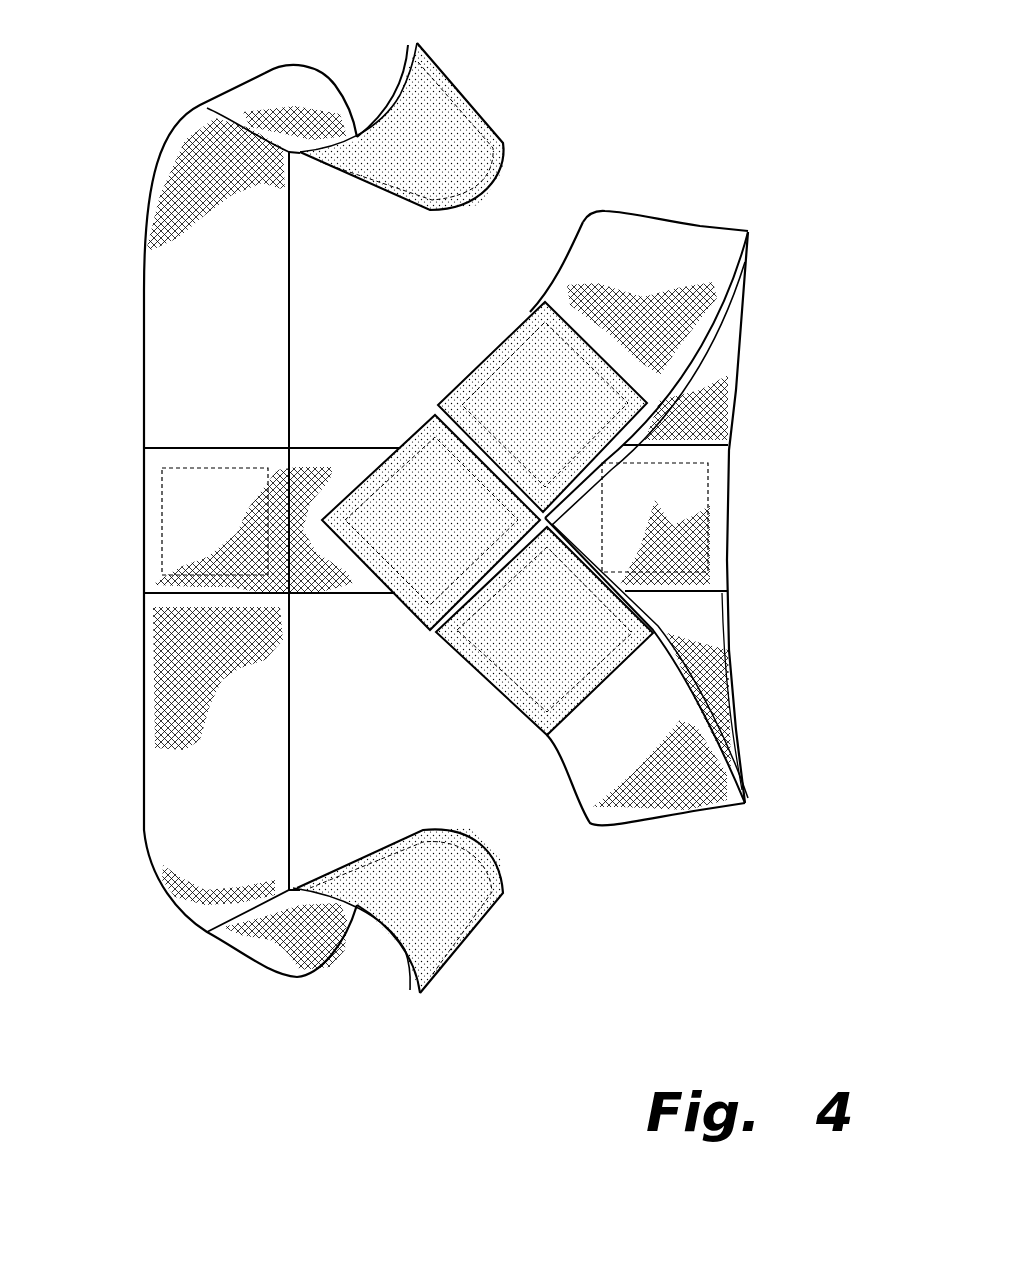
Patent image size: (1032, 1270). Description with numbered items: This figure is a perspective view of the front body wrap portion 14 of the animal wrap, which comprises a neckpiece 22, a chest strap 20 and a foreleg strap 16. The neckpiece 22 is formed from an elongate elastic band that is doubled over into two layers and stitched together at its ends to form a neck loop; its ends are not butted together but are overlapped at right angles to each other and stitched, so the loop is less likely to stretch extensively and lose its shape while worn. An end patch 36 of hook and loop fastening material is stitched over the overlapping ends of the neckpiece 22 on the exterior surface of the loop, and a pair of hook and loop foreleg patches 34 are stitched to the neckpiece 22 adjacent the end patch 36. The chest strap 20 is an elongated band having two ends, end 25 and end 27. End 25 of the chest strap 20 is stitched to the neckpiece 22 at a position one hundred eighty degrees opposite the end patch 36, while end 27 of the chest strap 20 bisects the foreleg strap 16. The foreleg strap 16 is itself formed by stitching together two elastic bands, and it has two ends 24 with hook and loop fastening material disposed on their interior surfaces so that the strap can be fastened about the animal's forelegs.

The front body wrap portion 14 is at (638, 103).
The foreleg strap 16 is at (170, 122).
The chest strap 20 is at (355, 447).
The neckpiece 22 is at (750, 308).
The ends of foreleg strap 24 is at (455, 100).
The end of chest strap 25 is at (722, 550).
The end of chest strap 27 is at (152, 495).
The foreleg patches 34 is at (542, 380).
The end patch 36 is at (432, 565).